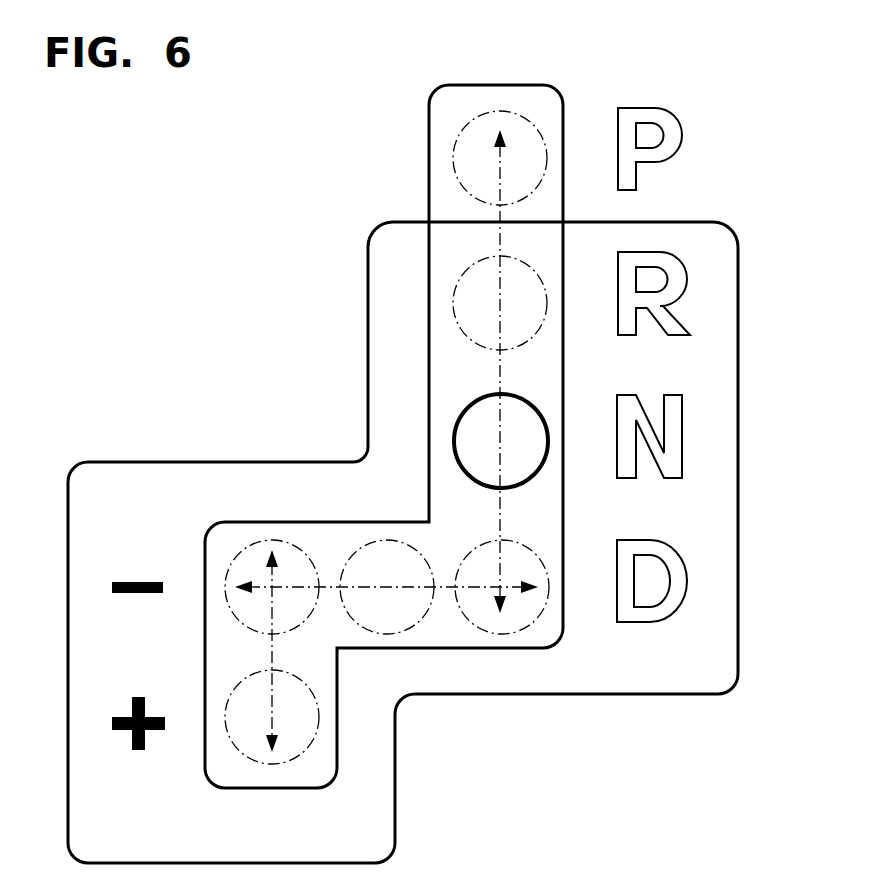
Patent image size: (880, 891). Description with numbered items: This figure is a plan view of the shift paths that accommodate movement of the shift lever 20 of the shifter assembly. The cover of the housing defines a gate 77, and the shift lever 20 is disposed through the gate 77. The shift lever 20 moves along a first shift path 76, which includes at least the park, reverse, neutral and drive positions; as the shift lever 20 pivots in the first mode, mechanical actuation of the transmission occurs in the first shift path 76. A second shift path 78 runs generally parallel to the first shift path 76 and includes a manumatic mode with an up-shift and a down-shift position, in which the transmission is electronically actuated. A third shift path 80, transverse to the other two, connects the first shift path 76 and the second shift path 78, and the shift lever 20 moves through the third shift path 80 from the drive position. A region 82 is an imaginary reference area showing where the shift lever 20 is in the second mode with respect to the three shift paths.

The shift lever 20 is at (470, 442).
The first shift path 76 is at (502, 372).
The gate 77 is at (533, 507).
The second shift path 78 is at (273, 660).
The third shift path 80 is at (436, 587).
The region 82 is at (738, 686).